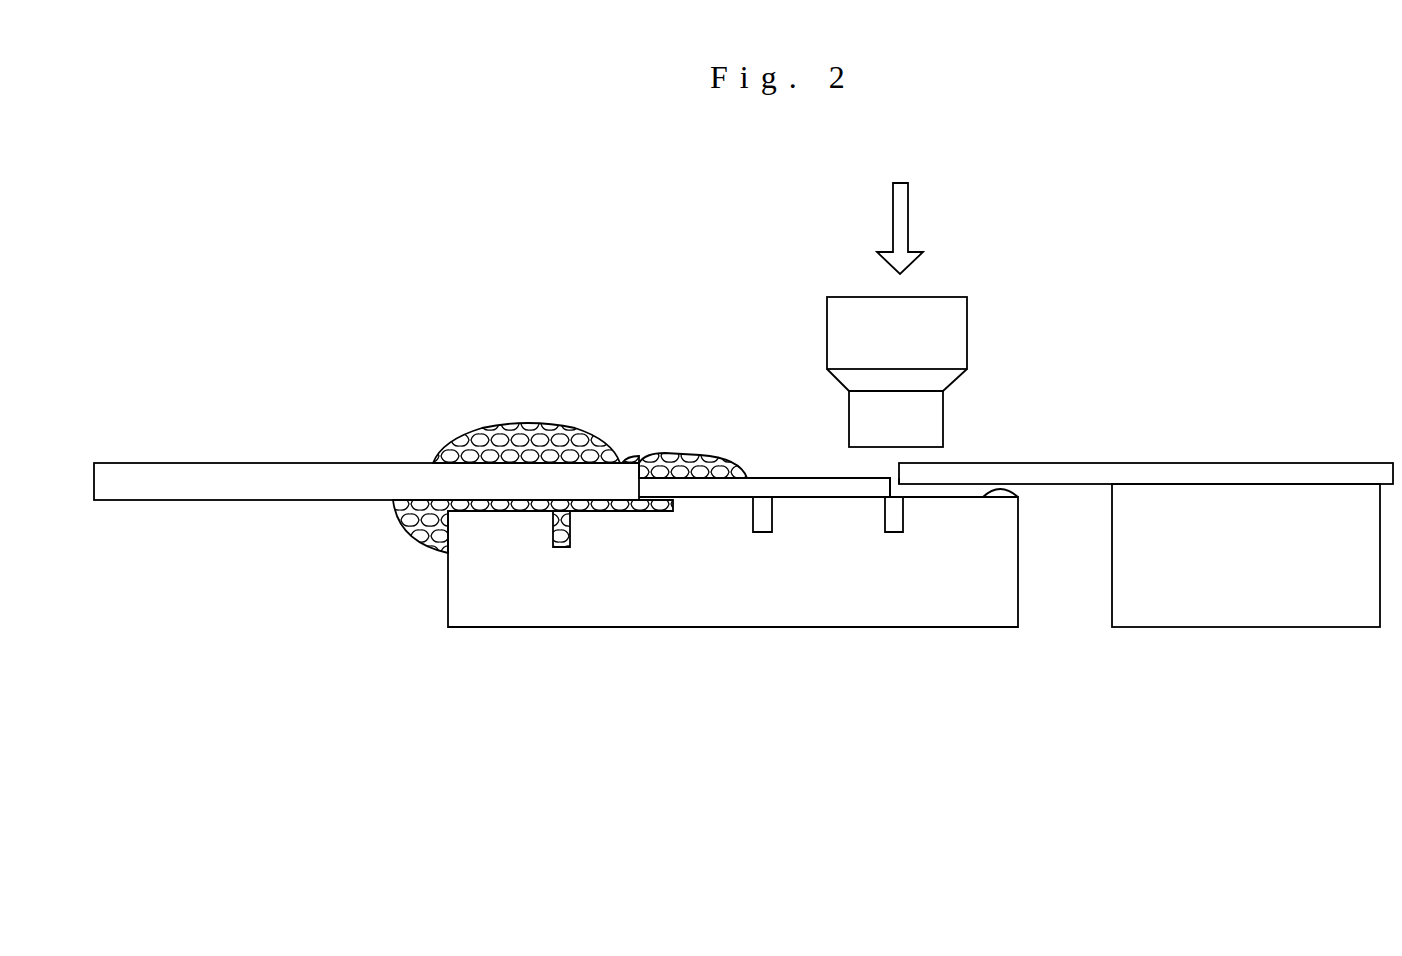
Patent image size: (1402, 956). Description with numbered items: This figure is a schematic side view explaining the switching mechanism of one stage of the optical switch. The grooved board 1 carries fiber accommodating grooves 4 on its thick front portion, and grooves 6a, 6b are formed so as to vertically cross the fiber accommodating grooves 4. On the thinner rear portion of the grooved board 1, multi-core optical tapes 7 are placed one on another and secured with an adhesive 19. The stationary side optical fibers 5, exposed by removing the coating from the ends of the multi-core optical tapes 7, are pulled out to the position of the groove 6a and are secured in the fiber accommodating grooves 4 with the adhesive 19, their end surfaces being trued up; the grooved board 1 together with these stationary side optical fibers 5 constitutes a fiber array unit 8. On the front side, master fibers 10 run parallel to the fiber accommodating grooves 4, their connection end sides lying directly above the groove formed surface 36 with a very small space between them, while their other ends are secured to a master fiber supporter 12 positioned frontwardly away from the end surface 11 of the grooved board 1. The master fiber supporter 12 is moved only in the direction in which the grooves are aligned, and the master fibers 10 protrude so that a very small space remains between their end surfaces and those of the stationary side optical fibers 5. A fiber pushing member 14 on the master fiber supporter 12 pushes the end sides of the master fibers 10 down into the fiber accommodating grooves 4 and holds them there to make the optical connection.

The grooved board 1 is at (843, 612).
The fiber accommodating grooves 4 is at (706, 500).
The stationary side optical fibers 5 is at (790, 488).
The groove 6a is at (893, 533).
The groove 6b is at (762, 533).
The multi-core optical tapes 7 is at (247, 465).
The fiber array unit 8 is at (731, 400).
The master fibers 10 is at (1278, 472).
The end surface 11 is at (1018, 588).
The master fiber supporter 12 is at (1237, 612).
The fiber pushing member 14 is at (955, 338).
The adhesive 19 is at (510, 427).
The groove formed surface 36 is at (1018, 498).